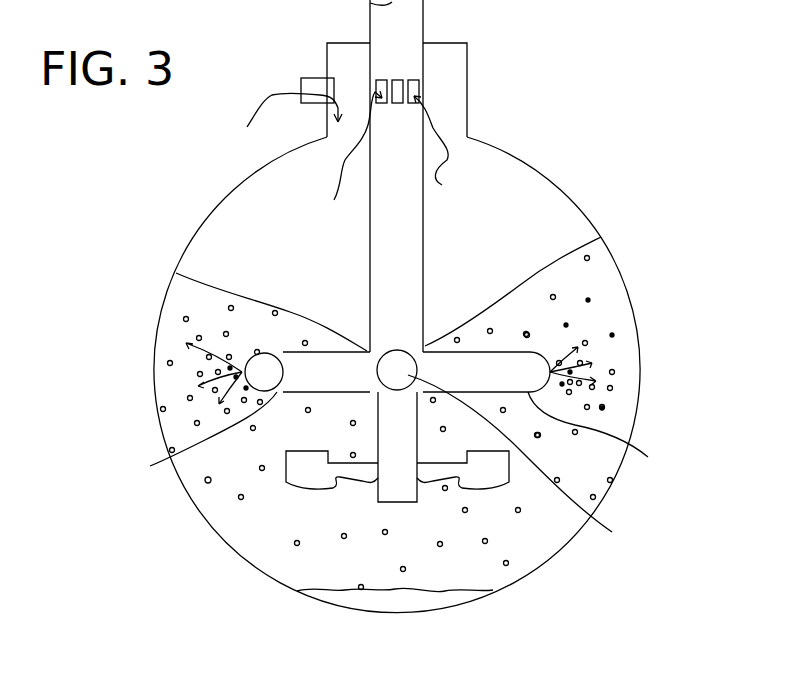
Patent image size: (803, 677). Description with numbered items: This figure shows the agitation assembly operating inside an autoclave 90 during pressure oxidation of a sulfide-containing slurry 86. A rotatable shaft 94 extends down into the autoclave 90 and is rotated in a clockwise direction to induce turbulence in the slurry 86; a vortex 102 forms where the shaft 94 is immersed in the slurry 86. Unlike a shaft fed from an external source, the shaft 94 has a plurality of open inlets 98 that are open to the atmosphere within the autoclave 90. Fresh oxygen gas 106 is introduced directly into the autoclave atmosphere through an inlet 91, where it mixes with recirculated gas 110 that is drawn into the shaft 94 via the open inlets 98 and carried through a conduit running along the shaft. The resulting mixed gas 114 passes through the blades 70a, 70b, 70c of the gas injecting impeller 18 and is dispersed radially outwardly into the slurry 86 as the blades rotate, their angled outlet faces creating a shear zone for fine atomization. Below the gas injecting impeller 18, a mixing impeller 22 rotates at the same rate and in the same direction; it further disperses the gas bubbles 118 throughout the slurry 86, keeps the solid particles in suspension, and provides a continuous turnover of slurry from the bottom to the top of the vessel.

The gas injecting impeller 18 is at (532, 348).
The mixing impeller 22 is at (298, 486).
The impeller blade 70a is at (150, 466).
The impeller blade 70b is at (534, 466).
The impeller blade 70c is at (612, 437).
The sulfide-containing slurry 86 is at (625, 347).
The autoclave 90 is at (556, 171).
The inlet 91 is at (312, 76).
The rotatable shaft 94 is at (425, 270).
The open inlets 98 is at (420, 86).
The vortex 102 is at (303, 315).
The oxygen gas 106 is at (284, 123).
The recirculated gas 110 is at (404, 158).
The mixed gas 114 is at (208, 400).
The gas bubbles 118 is at (207, 483).